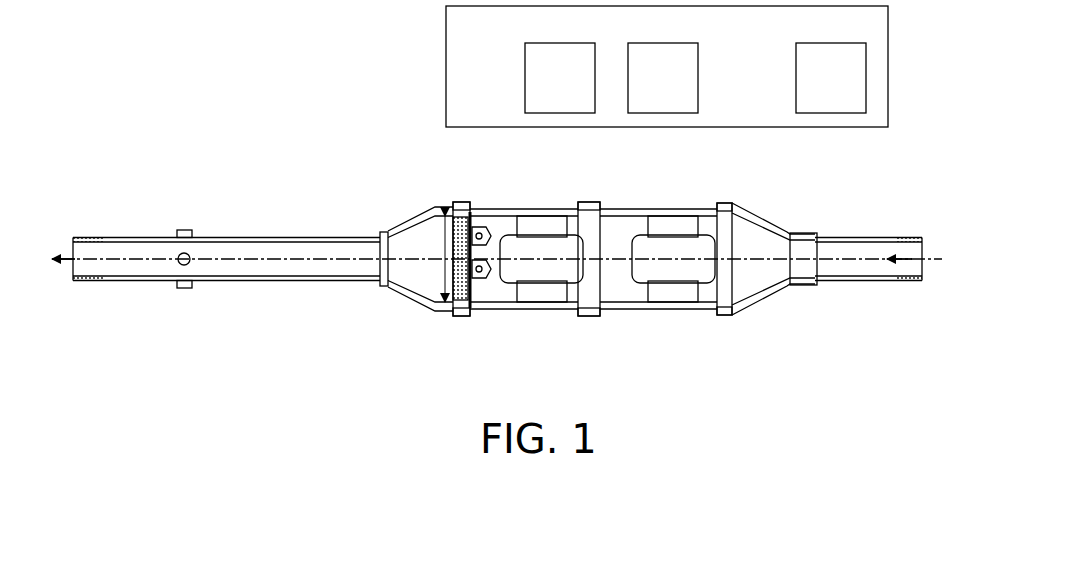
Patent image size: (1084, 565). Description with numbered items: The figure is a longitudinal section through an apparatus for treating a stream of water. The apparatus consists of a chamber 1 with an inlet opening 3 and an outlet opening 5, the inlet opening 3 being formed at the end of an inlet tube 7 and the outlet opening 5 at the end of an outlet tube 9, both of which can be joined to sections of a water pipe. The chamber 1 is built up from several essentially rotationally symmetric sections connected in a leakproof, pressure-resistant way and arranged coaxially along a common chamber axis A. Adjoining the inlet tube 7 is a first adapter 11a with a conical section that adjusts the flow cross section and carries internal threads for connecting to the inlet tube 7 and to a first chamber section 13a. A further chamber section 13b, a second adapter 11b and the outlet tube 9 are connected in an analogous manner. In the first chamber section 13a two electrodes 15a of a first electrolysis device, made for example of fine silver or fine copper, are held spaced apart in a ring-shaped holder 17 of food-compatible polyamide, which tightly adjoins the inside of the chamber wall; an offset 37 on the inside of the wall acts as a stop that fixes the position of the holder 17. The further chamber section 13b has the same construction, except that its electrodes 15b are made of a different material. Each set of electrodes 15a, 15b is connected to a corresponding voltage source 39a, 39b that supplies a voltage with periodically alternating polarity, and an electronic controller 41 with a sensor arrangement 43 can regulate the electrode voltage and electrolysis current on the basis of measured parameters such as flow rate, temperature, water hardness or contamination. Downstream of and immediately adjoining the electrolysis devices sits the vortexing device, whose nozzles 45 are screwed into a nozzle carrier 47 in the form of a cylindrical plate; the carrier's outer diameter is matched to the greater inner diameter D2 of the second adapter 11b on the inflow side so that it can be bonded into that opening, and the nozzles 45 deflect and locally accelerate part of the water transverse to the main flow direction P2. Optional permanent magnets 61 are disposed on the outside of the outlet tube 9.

The chamber 1 is at (586, 259).
The inlet opening 3 is at (922, 246).
The outlet opening 5 is at (73, 245).
The inlet tube 7 is at (865, 237).
The outlet tube 9 is at (128, 237).
The first adapter 11a is at (767, 218).
The second adapter 11b is at (412, 213).
The first chamber section 13a is at (697, 208).
The further chamber section 13b is at (533, 208).
The electrodes 15a is at (642, 284).
The electrodes 15b is at (572, 284).
The holder 17 is at (547, 303).
The offset 37 is at (512, 213).
The voltage source 39a is at (685, 92).
The voltage source 39b is at (581, 92).
The electronic controller 41 is at (488, 47).
The sensor arrangement 43 is at (846, 87).
The nozzles 45 is at (488, 247).
The nozzle carrier 47 is at (457, 300).
The permanent magnets 61 is at (193, 279).
The chamber axis A is at (268, 257).
The inner diameter D2 is at (426, 259).
The exhaust gas flow direction P2 is at (87, 262).